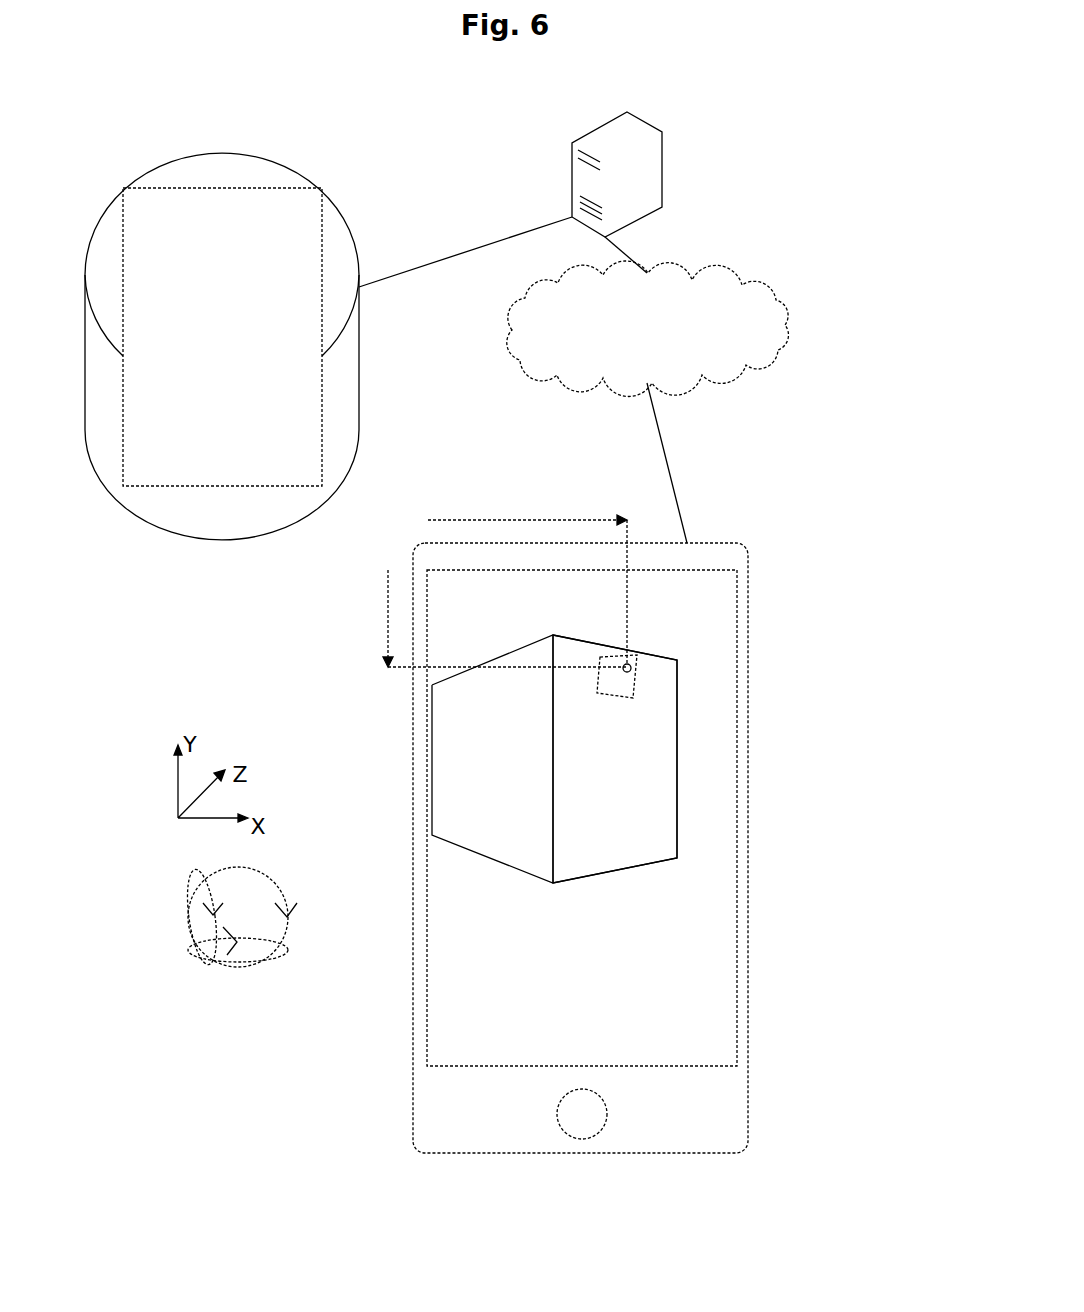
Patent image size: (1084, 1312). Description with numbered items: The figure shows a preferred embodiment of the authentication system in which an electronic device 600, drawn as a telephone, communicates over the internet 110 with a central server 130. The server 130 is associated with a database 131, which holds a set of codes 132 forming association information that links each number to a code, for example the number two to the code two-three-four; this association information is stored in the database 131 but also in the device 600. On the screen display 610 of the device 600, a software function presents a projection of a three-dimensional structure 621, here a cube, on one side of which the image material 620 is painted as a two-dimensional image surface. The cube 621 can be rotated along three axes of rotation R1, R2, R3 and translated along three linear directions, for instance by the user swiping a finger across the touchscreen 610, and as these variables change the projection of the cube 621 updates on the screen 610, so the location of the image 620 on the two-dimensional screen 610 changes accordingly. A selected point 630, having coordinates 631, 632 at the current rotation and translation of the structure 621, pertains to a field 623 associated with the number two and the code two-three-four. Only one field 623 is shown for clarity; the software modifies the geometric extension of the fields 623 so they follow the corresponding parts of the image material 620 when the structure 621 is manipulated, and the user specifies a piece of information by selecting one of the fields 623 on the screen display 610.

The internet 110 is at (648, 329).
The central server 130 is at (617, 174).
The database 131 is at (222, 339).
The set of codes 132 is at (190, 487).
The electronic device 600 is at (748, 825).
The screen display 610 is at (735, 900).
The image material 620 is at (663, 740).
The three-dimensional structure 621 is at (645, 868).
The field 623 is at (667, 675).
The selected point 630 is at (631, 665).
The coordinate 631 is at (527, 574).
The coordinate 632 is at (478, 618).
The axis of rotation R1 is at (215, 917).
The axis of rotation R2 is at (238, 939).
The axis of rotation R3 is at (258, 917).